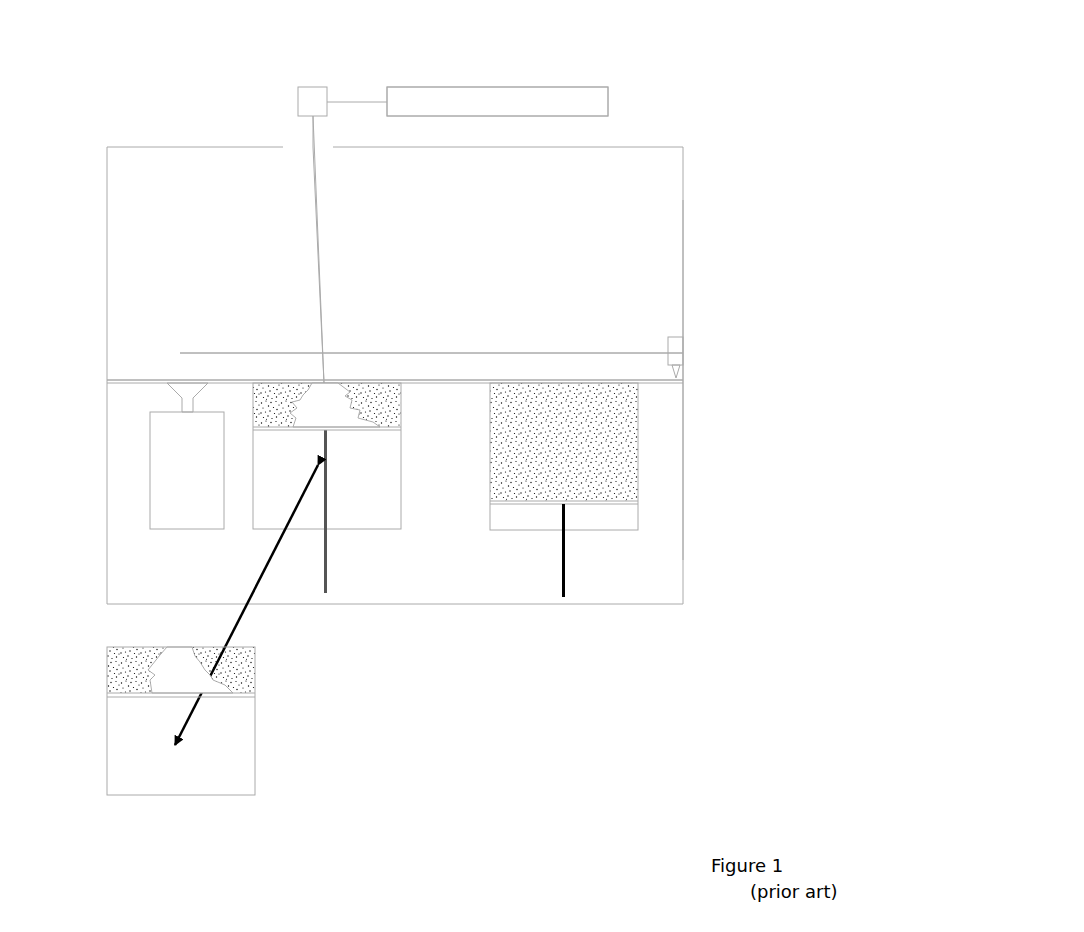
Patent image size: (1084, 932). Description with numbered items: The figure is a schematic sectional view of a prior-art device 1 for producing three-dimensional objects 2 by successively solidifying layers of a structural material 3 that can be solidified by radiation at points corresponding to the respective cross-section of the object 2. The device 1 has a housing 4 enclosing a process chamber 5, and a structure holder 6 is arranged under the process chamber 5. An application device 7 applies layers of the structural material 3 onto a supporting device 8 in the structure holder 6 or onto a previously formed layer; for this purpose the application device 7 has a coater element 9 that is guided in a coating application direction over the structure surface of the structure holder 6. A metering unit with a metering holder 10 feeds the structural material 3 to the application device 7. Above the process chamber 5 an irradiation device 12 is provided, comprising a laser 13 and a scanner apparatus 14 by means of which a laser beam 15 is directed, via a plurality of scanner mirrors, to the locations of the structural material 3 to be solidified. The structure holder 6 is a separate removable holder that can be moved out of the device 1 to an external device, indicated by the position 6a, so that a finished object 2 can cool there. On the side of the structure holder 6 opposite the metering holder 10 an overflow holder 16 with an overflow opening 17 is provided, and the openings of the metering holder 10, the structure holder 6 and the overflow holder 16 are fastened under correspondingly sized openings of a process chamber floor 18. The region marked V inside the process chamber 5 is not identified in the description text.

The device 1 is at (675, 133).
The three-dimensional object 2 is at (326, 397).
The structural material 3 is at (565, 460).
The housing 4 is at (684, 290).
The process chamber 5 is at (485, 255).
The structure holder 6 is at (363, 517).
The position of the structure holder in an external device 6a is at (237, 762).
The application device 7 is at (605, 347).
The supporting device 8 is at (360, 433).
The coater element 9 is at (679, 370).
The metering holder 10 is at (641, 442).
The irradiation device 12 is at (430, 76).
The laser 13 is at (573, 100).
The scanner apparatus 14 is at (311, 100).
The laser beam 15 is at (355, 101).
The overflow holder 16 is at (178, 485).
The overflow opening 17 is at (187, 385).
The process chamber floor 18 is at (464, 381).
The process volume V is at (275, 353).